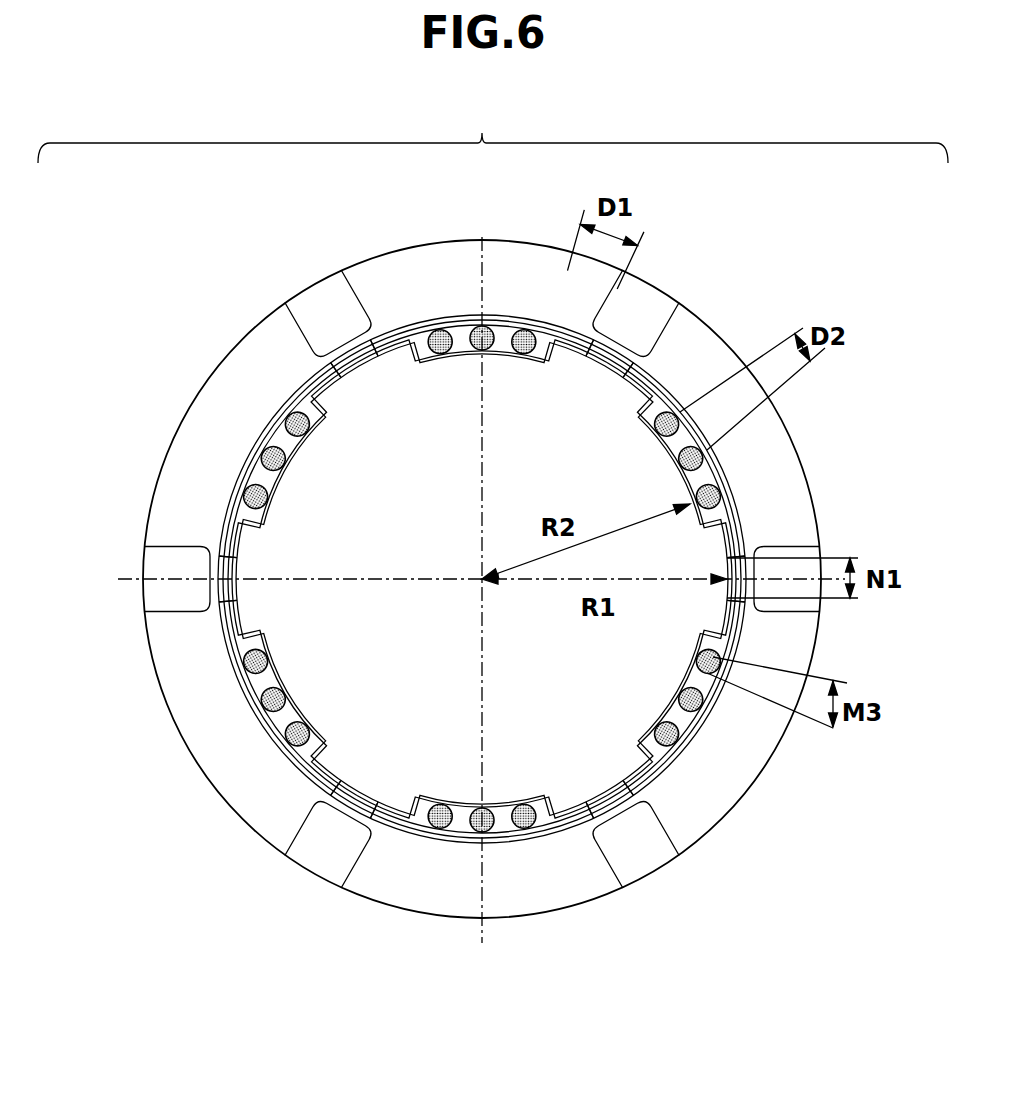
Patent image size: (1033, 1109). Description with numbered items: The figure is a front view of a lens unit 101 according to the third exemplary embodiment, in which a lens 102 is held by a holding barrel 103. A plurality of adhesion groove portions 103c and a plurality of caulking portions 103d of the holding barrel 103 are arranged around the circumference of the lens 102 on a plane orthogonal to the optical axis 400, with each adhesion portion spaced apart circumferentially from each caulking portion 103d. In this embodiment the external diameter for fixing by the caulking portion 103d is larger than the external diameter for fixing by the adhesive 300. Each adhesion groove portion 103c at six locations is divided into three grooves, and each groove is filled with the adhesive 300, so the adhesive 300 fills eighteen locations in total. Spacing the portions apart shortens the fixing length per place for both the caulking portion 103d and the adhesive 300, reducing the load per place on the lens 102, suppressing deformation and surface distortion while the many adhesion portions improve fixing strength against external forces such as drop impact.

The lens unit 101 is at (493, 130).
The lens 102 is at (240, 610).
The holding barrel 103 is at (378, 287).
The adhesion groove portion 103c is at (309, 679).
The caulking portion 103d is at (594, 771).
The adhesive 300 is at (436, 331).
The optical axis 400 is at (479, 574).